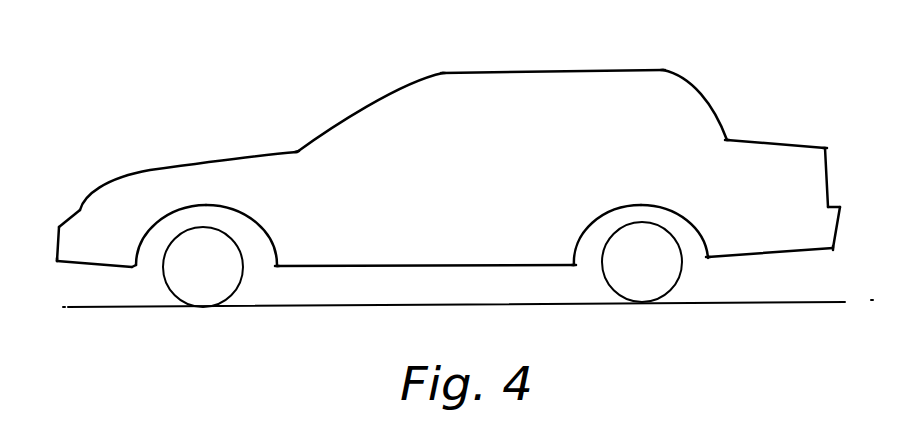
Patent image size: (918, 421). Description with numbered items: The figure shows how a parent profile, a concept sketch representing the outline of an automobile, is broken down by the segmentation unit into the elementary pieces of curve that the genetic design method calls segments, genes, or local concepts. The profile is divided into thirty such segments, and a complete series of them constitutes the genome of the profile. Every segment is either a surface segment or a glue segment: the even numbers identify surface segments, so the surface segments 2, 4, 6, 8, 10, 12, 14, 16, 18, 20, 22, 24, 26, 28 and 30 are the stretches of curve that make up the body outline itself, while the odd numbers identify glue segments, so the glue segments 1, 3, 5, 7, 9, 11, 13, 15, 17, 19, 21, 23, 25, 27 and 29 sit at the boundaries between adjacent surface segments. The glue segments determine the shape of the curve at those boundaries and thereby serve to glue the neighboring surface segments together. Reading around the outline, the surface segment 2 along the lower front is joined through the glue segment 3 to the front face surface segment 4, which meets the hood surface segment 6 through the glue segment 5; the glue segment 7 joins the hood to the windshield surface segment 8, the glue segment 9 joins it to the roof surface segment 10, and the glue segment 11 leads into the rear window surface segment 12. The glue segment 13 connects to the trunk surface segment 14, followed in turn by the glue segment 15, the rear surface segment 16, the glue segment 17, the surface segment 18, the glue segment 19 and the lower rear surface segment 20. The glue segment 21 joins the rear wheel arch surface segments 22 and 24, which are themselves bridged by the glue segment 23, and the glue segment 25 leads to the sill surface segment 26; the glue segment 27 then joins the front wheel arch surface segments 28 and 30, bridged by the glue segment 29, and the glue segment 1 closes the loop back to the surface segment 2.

The glue segment 1 is at (108, 250).
The surface segment 2 is at (94, 279).
The glue segment 3 is at (67, 261).
The surface segment 4 is at (75, 249).
The glue segment 5 is at (98, 227).
The surface segment 6 is at (188, 175).
The glue segment 7 is at (312, 167).
The surface segment 8 is at (370, 112).
The glue segment 9 is at (453, 87).
The surface segment 10 is at (553, 57).
The glue segment 11 is at (645, 88).
The surface segment 12 is at (698, 105).
The glue segment 13 is at (708, 137).
The surface segment 14 is at (776, 131).
The glue segment 15 is at (815, 170).
The surface segment 16 is at (841, 177).
The glue segment 17 is at (810, 205).
The surface segment 18 is at (852, 227).
The glue segment 19 is at (818, 232).
The surface segment 20 is at (770, 265).
The glue segment 21 is at (718, 230).
The surface segment 22 is at (674, 223).
The glue segment 23 is at (642, 222).
The surface segment 24 is at (600, 231).
The glue segment 25 is at (555, 237).
The surface segment 26 is at (425, 252).
The glue segment 27 is at (300, 252).
The surface segment 28 is at (241, 229).
The glue segment 29 is at (214, 232).
The surface segment 30 is at (162, 232).